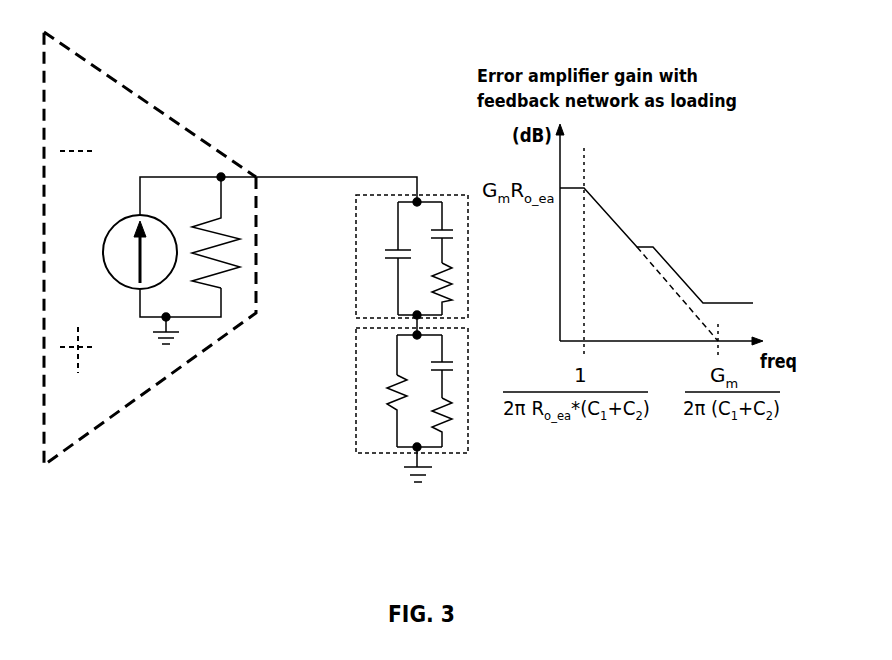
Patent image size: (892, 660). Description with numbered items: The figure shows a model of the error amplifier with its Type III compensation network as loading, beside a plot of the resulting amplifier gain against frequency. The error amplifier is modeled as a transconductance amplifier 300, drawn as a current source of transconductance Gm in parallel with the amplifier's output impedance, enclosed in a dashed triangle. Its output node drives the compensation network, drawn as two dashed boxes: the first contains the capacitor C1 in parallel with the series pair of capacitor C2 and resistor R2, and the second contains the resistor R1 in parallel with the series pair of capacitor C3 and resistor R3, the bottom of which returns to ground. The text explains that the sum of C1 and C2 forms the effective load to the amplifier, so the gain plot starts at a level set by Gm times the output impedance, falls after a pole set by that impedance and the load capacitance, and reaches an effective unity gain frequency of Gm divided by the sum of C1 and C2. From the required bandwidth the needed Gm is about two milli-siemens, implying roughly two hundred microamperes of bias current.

The transconductance amplifier 300 is at (230, 254).
The transconductance Gm is at (119, 252).
The capacitor C1 is at (384, 258).
The capacitor C2 is at (429, 232).
The resistor R2 is at (429, 289).
The resistor R1 is at (383, 391).
The capacitor C3 is at (429, 366).
The resistor R3 is at (429, 422).